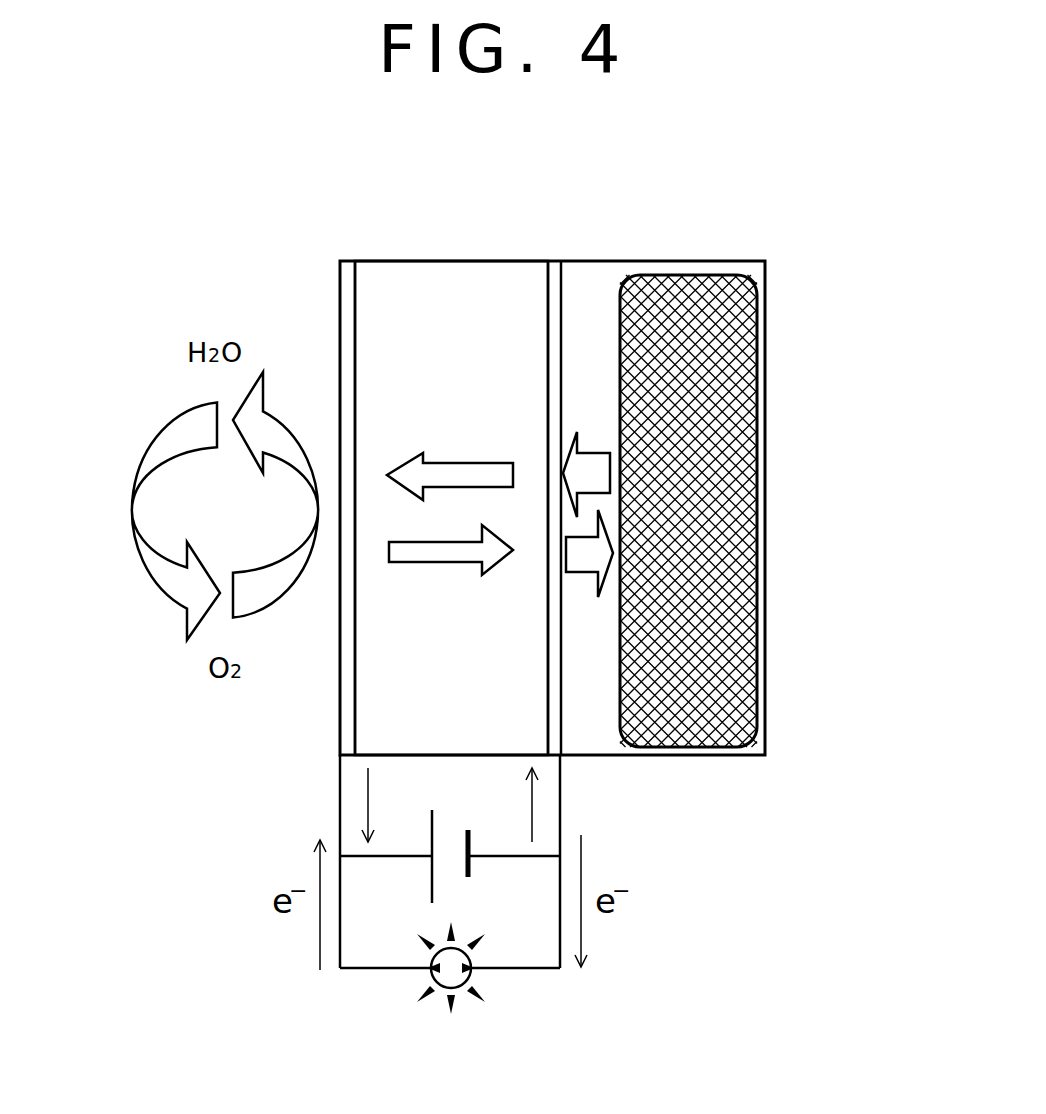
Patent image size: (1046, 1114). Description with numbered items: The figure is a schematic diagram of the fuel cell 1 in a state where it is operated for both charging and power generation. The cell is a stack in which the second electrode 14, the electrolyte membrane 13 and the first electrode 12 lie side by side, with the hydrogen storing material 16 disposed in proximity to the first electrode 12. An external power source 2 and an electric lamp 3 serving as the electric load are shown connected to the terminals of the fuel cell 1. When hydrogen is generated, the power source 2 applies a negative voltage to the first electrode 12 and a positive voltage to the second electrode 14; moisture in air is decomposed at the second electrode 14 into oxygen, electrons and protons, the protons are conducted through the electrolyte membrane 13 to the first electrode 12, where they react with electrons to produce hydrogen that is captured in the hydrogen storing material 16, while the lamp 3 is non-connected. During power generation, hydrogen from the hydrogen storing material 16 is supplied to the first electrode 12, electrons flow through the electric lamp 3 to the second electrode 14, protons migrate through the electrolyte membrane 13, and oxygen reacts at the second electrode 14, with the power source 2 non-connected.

The fuel cell 1 is at (845, 650).
The power source 2 is at (471, 866).
The electric lamp 3 is at (432, 995).
The first electrode 12 is at (555, 296).
The electrolyte membrane 13 is at (458, 286).
The second electrode 14 is at (346, 292).
The hydrogen storing material 16 is at (740, 378).